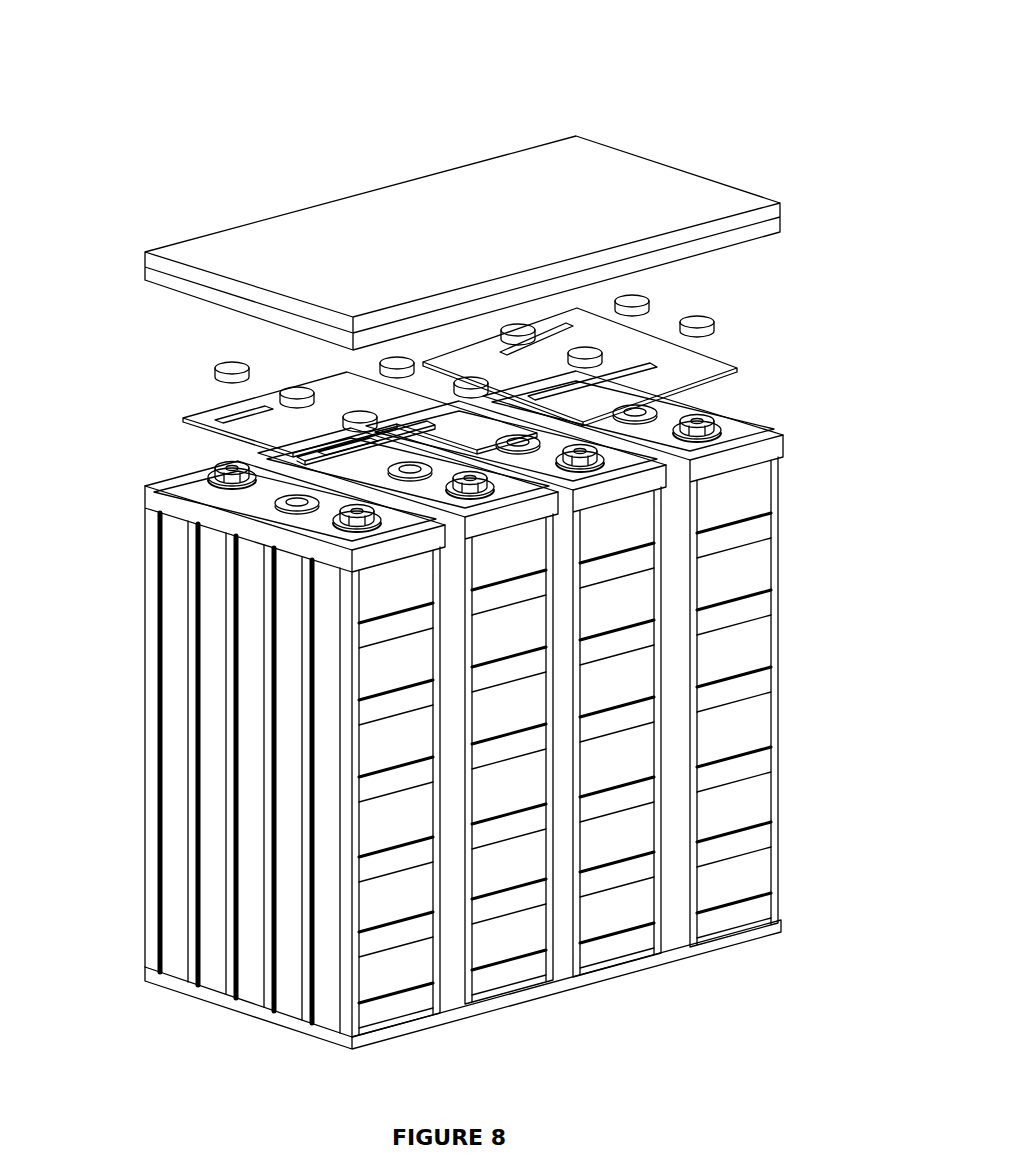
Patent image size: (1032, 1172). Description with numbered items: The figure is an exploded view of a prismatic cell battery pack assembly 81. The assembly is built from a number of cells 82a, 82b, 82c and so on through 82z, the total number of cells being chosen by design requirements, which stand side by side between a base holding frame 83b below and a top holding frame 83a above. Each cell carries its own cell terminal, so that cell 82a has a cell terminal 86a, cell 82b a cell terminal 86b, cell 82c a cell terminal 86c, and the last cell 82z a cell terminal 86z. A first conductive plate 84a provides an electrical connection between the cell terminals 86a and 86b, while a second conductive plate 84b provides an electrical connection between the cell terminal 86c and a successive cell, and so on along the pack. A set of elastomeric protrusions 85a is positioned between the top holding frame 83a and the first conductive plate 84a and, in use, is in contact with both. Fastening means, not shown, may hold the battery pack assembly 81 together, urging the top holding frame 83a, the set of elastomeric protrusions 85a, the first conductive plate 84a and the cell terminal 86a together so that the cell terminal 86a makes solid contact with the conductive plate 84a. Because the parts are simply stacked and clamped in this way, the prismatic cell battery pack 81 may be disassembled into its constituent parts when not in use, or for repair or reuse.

The prismatic cell battery pack assembly 81 is at (721, 99).
The cell 82a is at (732, 915).
The cell 82b is at (630, 950).
The cell 82c is at (523, 980).
The cell 82z is at (407, 1003).
The top holding frame 83a is at (720, 187).
The base holding frame 83b is at (240, 1005).
The first conductive plate 84a is at (697, 362).
The second conductive plate 84b is at (195, 418).
The set of elastomeric protrusions 85a is at (705, 318).
The cell terminal 86a is at (710, 434).
The cell terminal 86b is at (597, 462).
The cell terminal 86c is at (462, 498).
The cell terminal 86z is at (348, 518).